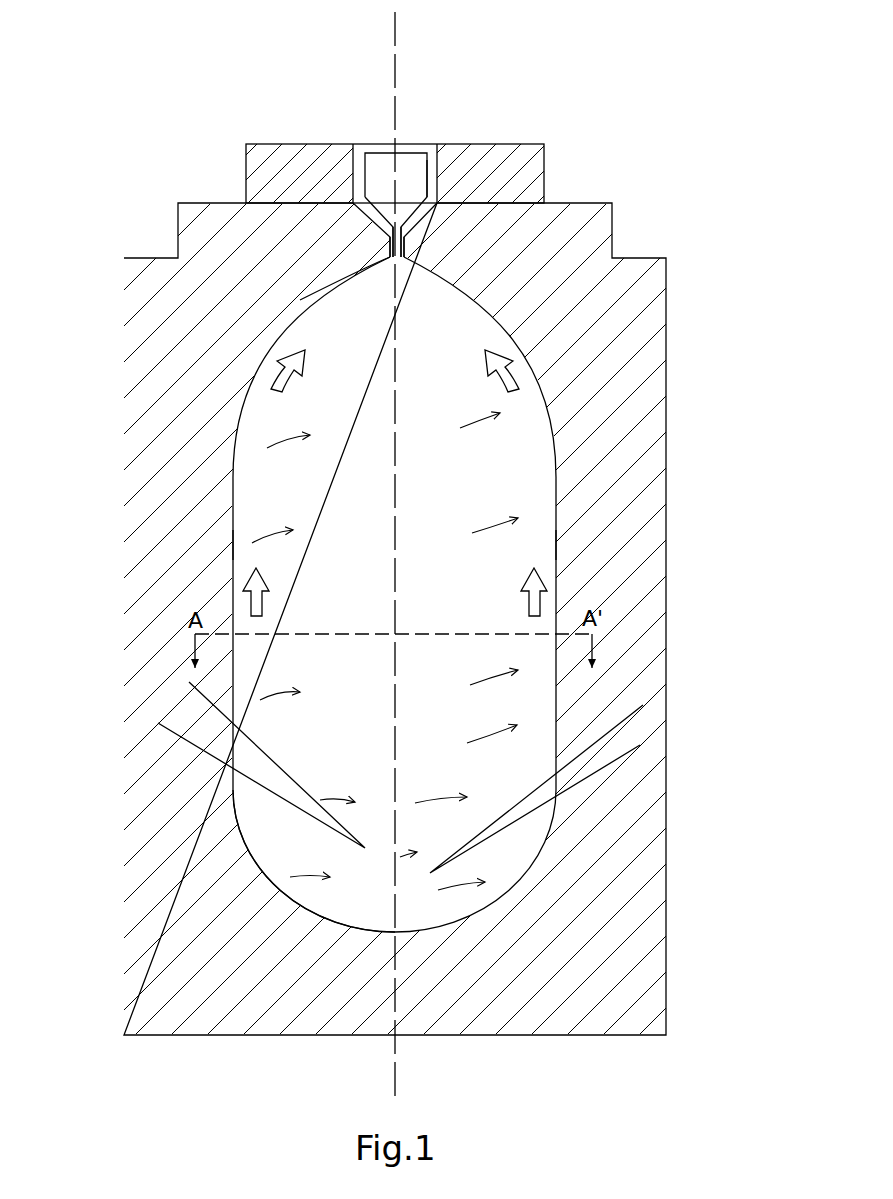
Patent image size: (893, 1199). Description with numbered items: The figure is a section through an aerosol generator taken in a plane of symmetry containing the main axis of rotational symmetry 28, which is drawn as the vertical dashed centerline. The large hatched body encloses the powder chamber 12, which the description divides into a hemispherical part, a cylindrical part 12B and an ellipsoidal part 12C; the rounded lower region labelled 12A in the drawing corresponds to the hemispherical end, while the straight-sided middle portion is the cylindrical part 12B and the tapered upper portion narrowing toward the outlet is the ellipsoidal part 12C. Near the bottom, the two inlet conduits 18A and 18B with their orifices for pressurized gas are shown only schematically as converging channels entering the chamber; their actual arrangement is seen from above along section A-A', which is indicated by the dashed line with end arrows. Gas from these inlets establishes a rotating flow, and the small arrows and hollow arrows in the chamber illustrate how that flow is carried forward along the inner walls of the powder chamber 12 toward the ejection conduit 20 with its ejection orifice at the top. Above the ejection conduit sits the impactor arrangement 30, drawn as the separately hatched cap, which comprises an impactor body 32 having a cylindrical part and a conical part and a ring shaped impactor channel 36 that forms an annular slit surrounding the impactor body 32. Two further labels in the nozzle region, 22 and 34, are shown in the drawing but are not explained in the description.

The main axis of rotational symmetry 28 is at (400, 63).
The impactor arrangement 30 is at (297, 163).
The impactor body 32 is at (384, 162).
The ring shaped impactor channel 36 is at (410, 147).
The nozzle wall 34 is at (437, 196).
The nozzle tip 22 is at (410, 213).
The ejection conduit 20 is at (402, 244).
The powder chamber 12 is at (272, 499).
The ellipsoidal part 12C is at (413, 317).
The cylindrical part 12B is at (437, 557).
The hemispherical part 12A is at (400, 900).
The inlet conduit 18B is at (203, 728).
The inlet conduit 18A is at (610, 748).